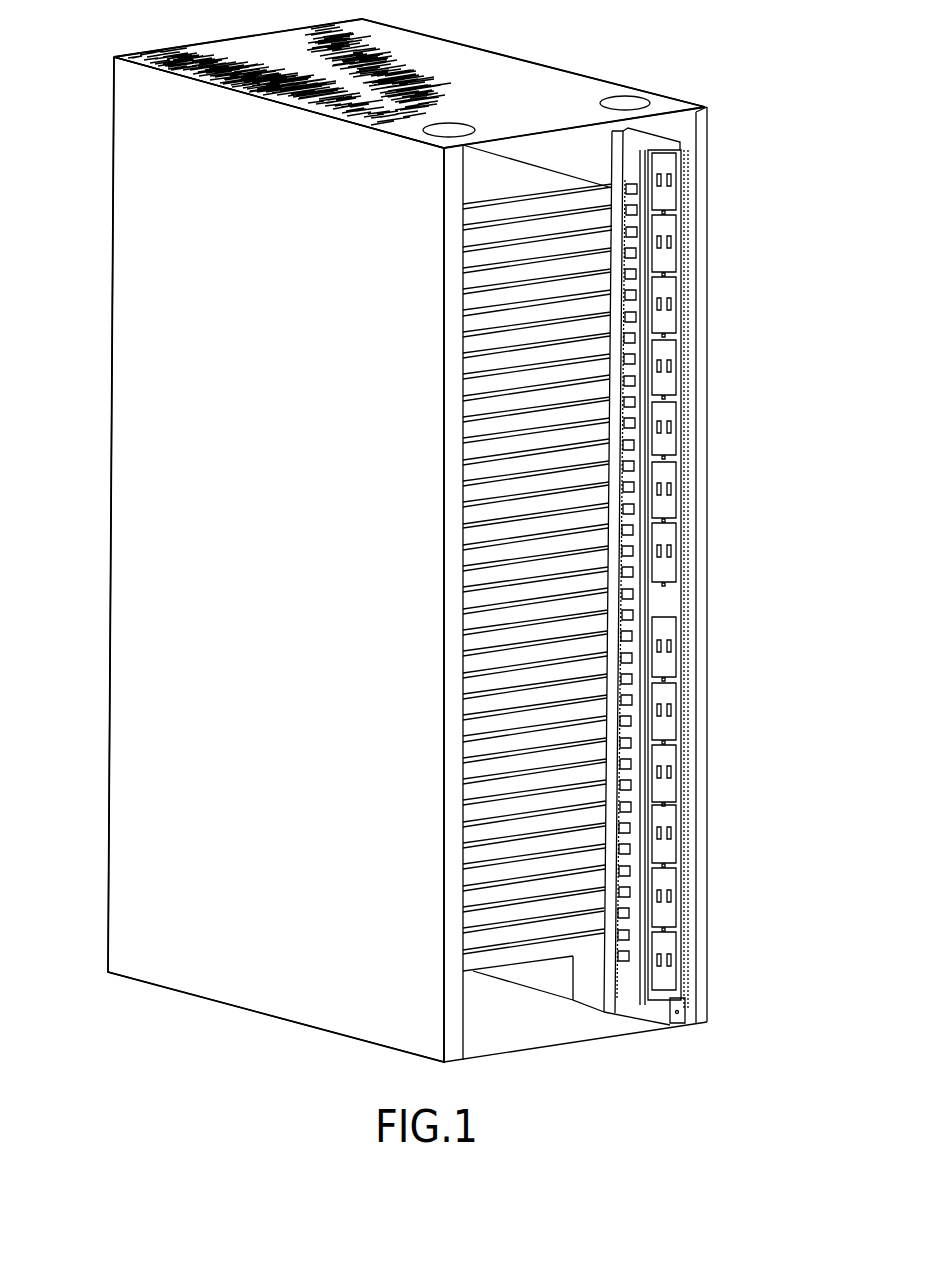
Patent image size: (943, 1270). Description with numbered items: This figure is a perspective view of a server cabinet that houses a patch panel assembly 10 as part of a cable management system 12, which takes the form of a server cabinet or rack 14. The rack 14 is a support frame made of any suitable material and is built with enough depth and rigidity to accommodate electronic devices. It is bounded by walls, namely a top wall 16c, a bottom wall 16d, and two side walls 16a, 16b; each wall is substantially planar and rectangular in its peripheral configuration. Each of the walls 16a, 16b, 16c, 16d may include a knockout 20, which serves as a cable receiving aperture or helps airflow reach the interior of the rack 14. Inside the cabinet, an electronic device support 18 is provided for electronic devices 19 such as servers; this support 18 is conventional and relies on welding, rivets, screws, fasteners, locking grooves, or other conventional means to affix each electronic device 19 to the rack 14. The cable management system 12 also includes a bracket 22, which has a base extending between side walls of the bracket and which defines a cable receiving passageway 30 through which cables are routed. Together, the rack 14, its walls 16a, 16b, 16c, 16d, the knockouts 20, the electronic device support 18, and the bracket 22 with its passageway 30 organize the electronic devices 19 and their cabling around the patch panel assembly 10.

The patch panel assembly 10 is at (718, 279).
The cable management system 12 is at (100, 240).
The rack 14 is at (378, 42).
The side wall 16a is at (697, 132).
The side wall 16b is at (152, 818).
The top wall 16c is at (246, 55).
The bottom wall 16d is at (505, 1038).
The electronic device support 18 is at (617, 153).
The electronic devices 19 is at (580, 608).
The knockout 20 is at (460, 121).
The bracket 22 is at (679, 137).
The cable receiving passageway 30 is at (636, 143).